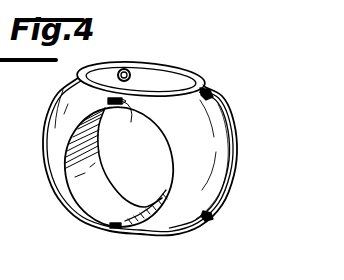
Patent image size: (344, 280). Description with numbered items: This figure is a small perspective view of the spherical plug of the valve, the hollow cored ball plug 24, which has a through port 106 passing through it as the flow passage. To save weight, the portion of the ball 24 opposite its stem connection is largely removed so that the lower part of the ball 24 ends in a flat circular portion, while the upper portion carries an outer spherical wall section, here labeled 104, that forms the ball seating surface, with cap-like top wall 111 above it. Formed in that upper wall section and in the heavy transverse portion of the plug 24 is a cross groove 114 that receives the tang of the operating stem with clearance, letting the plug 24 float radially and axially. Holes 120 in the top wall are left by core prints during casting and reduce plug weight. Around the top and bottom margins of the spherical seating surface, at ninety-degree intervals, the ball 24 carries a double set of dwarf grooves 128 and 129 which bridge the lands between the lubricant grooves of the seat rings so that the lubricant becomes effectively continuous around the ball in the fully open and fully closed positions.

The hollow cored ball plug 24 is at (220, 136).
The ring body 104 is at (222, 177).
The through port 106 is at (77, 191).
The cap 111 is at (108, 66).
The cross groove 114 is at (150, 73).
The holes 120 is at (131, 69).
The dwarf grooves 128 is at (113, 108).
The dwarf grooves 129 is at (203, 232).